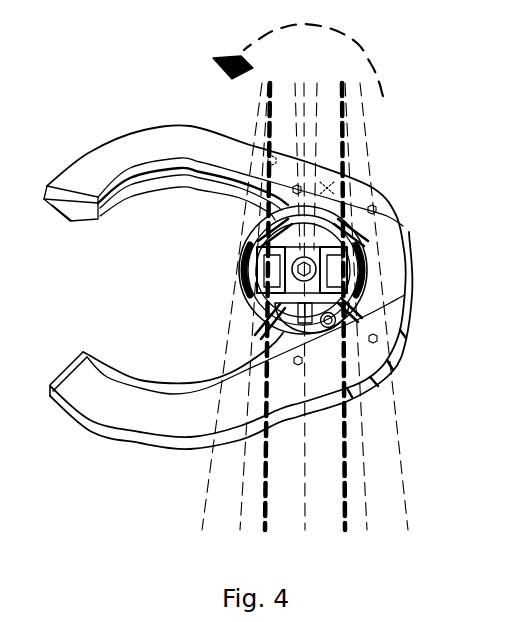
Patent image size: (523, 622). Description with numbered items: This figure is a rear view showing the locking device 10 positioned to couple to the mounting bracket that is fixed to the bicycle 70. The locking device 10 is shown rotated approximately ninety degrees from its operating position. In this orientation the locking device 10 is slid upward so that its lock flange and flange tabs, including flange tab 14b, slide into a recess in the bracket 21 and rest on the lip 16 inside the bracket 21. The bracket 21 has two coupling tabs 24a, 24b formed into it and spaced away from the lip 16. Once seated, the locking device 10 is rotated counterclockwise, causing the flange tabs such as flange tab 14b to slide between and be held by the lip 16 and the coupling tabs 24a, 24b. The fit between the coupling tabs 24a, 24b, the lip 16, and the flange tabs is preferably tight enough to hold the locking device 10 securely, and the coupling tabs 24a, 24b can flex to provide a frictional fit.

The locking device 10 is at (408, 182).
The flange tab 14b is at (268, 338).
The lip 16 is at (252, 262).
The bracket 21 is at (288, 210).
The coupling tab 24a is at (336, 268).
The coupling tab 24b is at (262, 278).
The bicycle 70 is at (210, 473).